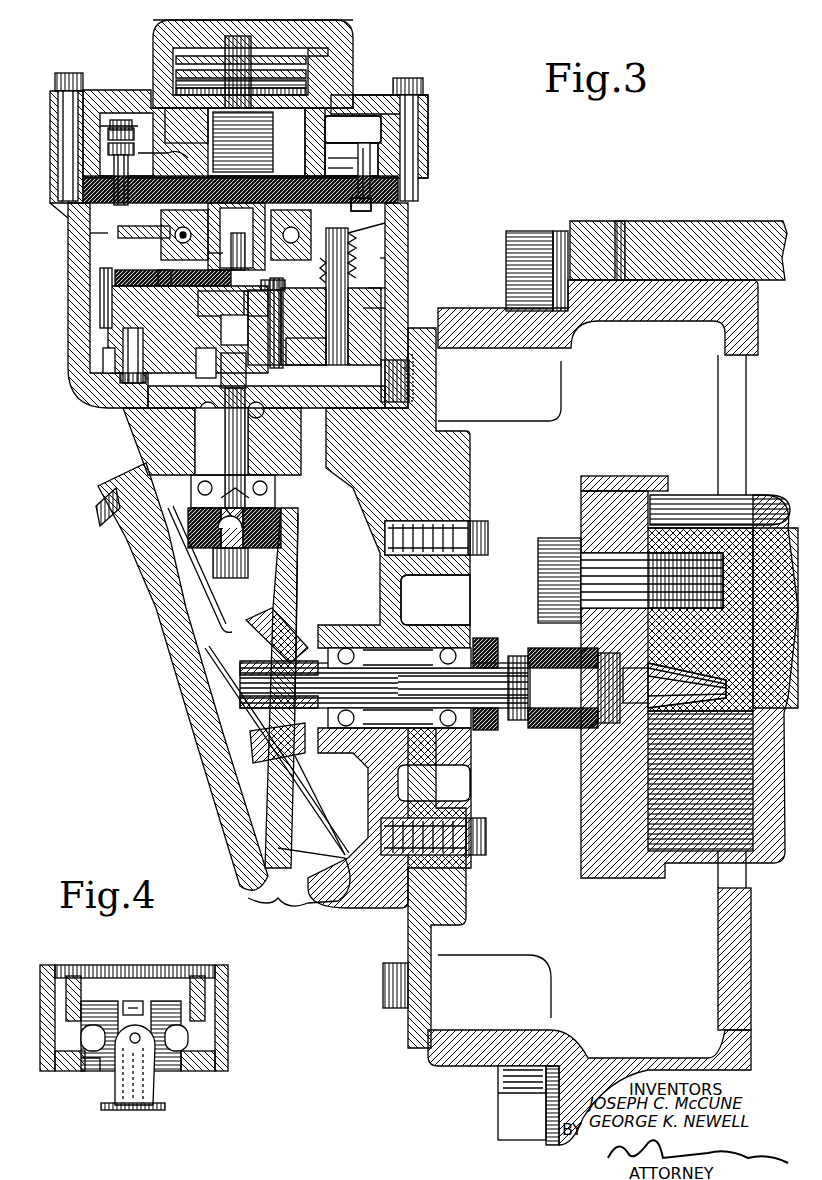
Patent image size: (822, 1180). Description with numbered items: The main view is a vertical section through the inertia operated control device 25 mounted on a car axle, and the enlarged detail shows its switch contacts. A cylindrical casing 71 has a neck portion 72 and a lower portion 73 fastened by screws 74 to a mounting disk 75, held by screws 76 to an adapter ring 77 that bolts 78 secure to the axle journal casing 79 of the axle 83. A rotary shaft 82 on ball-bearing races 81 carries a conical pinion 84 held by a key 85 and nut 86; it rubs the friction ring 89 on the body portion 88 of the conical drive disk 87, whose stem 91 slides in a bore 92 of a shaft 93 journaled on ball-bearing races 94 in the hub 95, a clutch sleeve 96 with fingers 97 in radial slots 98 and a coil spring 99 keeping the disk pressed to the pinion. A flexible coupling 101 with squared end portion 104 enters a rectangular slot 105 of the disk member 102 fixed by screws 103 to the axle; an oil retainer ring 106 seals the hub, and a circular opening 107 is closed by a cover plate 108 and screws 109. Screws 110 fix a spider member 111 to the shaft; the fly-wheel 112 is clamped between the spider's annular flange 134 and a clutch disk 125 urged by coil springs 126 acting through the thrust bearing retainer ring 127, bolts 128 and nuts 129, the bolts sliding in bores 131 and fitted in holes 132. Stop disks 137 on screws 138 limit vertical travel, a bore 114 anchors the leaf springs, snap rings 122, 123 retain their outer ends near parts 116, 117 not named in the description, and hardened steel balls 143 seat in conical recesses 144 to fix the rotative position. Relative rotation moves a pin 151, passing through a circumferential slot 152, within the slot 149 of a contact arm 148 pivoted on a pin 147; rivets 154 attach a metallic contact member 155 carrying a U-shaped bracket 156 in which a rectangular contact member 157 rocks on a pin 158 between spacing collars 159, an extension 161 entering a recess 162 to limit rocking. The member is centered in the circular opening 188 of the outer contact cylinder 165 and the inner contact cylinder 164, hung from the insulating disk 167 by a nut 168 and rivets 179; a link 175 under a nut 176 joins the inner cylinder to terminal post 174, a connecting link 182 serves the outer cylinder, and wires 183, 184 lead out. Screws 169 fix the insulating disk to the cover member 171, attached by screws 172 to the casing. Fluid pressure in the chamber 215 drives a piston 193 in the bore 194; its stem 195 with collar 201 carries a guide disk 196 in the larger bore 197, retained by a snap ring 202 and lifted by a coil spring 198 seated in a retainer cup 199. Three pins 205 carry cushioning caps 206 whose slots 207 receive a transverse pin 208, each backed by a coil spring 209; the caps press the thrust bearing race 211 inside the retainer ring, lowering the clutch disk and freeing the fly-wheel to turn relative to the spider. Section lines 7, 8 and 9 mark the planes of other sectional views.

In FIG. 3, the inertia operated control device 25 is at (148, 16).
In FIG. 3, the chamber 215 is at (318, 40).
In FIG. 3, the bore 194 is at (340, 40).
In FIG. 3, the collar 201 is at (300, 55).
In FIG. 3, the piston 193 is at (345, 44).
In FIG. 3, the pins 205 is at (298, 72).
In FIG. 3, the stem 195 is at (165, 56).
In FIG. 3, the guide disk 196 is at (165, 80).
In FIG. 3, the screws 172 is at (60, 64).
In FIG. 3, the cover member 171 is at (44, 95).
In FIG. 3, the coil spring 209 is at (255, 134).
In FIG. 3, the bore 197 is at (366, 103).
In FIG. 3, the coil spring 198 is at (186, 122).
In FIG. 3, the connecting link 182 is at (216, 142).
In FIG. 3, the snap ring 202 is at (353, 129).
In FIG. 3, the nut 168 is at (341, 159).
In FIG. 3, the retainer cup 199 is at (362, 150).
In FIG. 3, the pin 208 is at (365, 160).
In FIG. 3, the slots 207 is at (395, 172).
In FIG. 3, the cushioning cap 206 is at (400, 190).
In FIG. 3, the screws 169 is at (375, 175).
In FIG. 3, the nut 176 is at (92, 130).
In FIG. 3, the connecting metallic link 175 is at (100, 148).
In FIG. 3, the terminal post 174 is at (100, 158).
In FIG. 3, the insulating disk 167 is at (60, 176).
In FIG. 3, the wire 183 is at (110, 140).
In FIG. 3, the wire 184 is at (150, 145).
In FIG. 3, the outer contact cylinder 165 is at (303, 207).
In FIG. 4, the outer contact cylinder 165 is at (220, 975).
In FIG. 3, the contact arm 148 is at (110, 260).
In FIG. 3, the radially extending slot 149 is at (82, 240).
In FIG. 3, the thrust bearing retainer ring 127 is at (128, 223).
In FIG. 3, the rivets 179 is at (168, 228).
In FIG. 3, the contact member 157 is at (236, 236).
In FIG. 4, the contact member 157 is at (75, 1057).
In FIG. 3, the thrust bearing race 211 is at (132, 263).
In FIG. 3, the inner contact cylinder 164 is at (200, 248).
In FIG. 4, the inner contact cylinder 164 is at (188, 968).
In FIG. 3, the circumferential slot 152 is at (107, 280).
In FIG. 3, the pin 151 is at (188, 329).
In FIG. 3, the snap ring 123 is at (92, 305).
In FIG. 3, the pin 147 is at (135, 349).
In FIG. 3, the rivets 154 is at (213, 303).
In FIG. 3, the metallic contact member 155 is at (245, 303).
In FIG. 4, the metallic contact member 155 is at (150, 1100).
In FIG. 3, the bore 114 is at (213, 330).
In FIG. 3, the valve 116 is at (195, 362).
In FIG. 3, the valve seat 117 is at (227, 370).
In FIG. 3, the snap ring 122 is at (95, 355).
In FIG. 3, the U-shaped bracket member 156 is at (268, 311).
In FIG. 4, the U-shaped bracket member 156 is at (113, 1084).
In FIG. 3, the spider member 111 is at (310, 262).
In FIG. 3, the circular holes 132 is at (342, 230).
In FIG. 3, the circular bores 131 is at (330, 326).
In FIG. 3, the circular opening 188 is at (277, 327).
In FIG. 3, the screws 110 is at (300, 351).
In FIG. 3, the cylindrical casing 71 is at (398, 240).
In FIG. 3, the coil springs 126 is at (380, 230).
In FIG. 3, the bolts 128 is at (378, 250).
In FIG. 3, the annular flange 134 is at (378, 285).
In FIG. 3, the fly-wheel 112 is at (378, 305).
In FIG. 3, the section line 7 is at (160, 250).
In FIG. 3, the section line 8 is at (100, 322).
In FIG. 3, the section line 9 is at (145, 377).
In FIG. 3, the stop disks 137 is at (120, 400).
In FIG. 3, the screws 138 is at (130, 410).
In FIG. 3, the nuts 129 is at (297, 406).
In FIG. 3, the ball-bearing races 81 is at (270, 470).
In FIG. 3, the rotary shaft 82 is at (217, 425).
In FIG. 3, the clutch disk 125 is at (360, 400).
In FIG. 3, the screws 76 is at (398, 395).
In FIG. 3, the neck portion 72 is at (362, 420).
In FIG. 3, the mounting disk 75 is at (462, 470).
In FIG. 3, the conical recesses 144 is at (406, 359).
In FIG. 3, the hardened steel balls 143 is at (406, 370).
In FIG. 3, the screws 74 is at (478, 824).
In FIG. 3, the hub 95 is at (430, 615).
In FIG. 3, the stem 91 is at (305, 655).
In FIG. 3, the coil spring 99 is at (232, 690).
In FIG. 3, the ball-bearing races 94 is at (355, 640).
In FIG. 3, the bore 92 is at (380, 703).
In FIG. 3, the shaft 93 is at (420, 700).
In FIG. 3, the clutch sleeve 96 is at (298, 720).
In FIG. 3, the lower portion 73 is at (370, 893).
In FIG. 3, the oil retainer ring 106 is at (480, 722).
In FIG. 3, the flexible coupling 101 is at (545, 645).
In FIG. 3, the rectangular slot 105 is at (635, 668).
In FIG. 3, the squared end portion 104 is at (640, 698).
In FIG. 3, the cover plate 108 is at (145, 582).
In FIG. 3, the screws 109 is at (90, 510).
In FIG. 3, the key 85 is at (182, 528).
In FIG. 3, the nut 86 is at (213, 563).
In FIG. 3, the conical pinion 84 is at (262, 505).
In FIG. 3, the friction ring 89 is at (288, 528).
In FIG. 3, the body portion 88 is at (290, 552).
In FIG. 3, the conical drive disk 87 is at (292, 581).
In FIG. 3, the radial slots 98 is at (250, 608).
In FIG. 3, the fingers 97 is at (250, 628).
In FIG. 3, the circular opening 107 is at (300, 893).
In FIG. 3, the adapter ring 77 is at (478, 310).
In FIG. 3, the axle journal casing 79 is at (668, 222).
In FIG. 3, the bolts 78 is at (522, 228).
In FIG. 3, the axle 83 is at (700, 492).
In FIG. 3, the disk member 102 is at (625, 468).
In FIG. 3, the screws 103 is at (540, 532).
In FIG. 4, the recess 162 is at (118, 993).
In FIG. 4, the extension 161 is at (128, 997).
In FIG. 4, the spacing collars 159 is at (165, 1030).
In FIG. 4, the pin 158 is at (130, 1034).